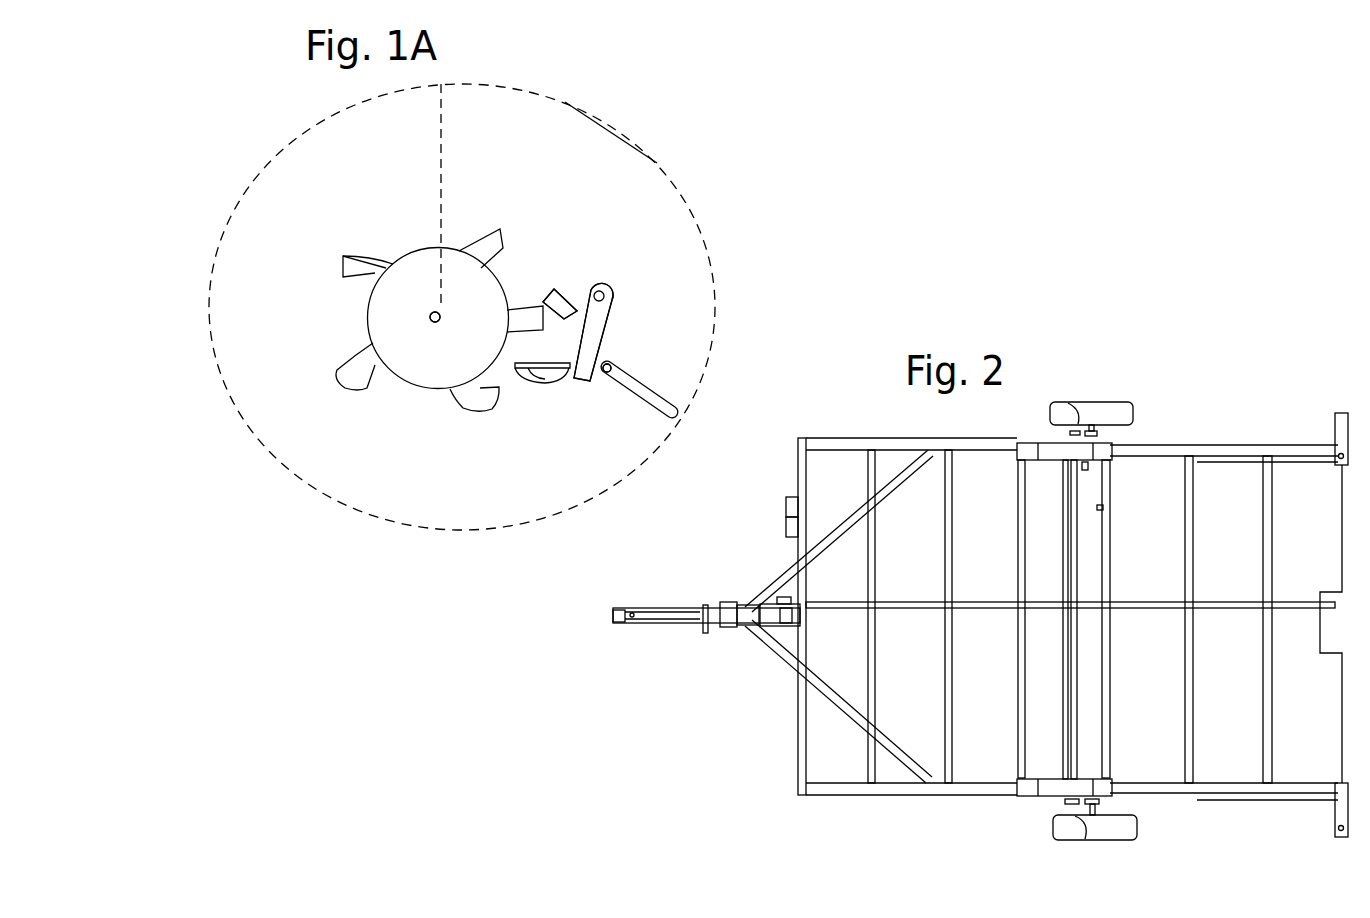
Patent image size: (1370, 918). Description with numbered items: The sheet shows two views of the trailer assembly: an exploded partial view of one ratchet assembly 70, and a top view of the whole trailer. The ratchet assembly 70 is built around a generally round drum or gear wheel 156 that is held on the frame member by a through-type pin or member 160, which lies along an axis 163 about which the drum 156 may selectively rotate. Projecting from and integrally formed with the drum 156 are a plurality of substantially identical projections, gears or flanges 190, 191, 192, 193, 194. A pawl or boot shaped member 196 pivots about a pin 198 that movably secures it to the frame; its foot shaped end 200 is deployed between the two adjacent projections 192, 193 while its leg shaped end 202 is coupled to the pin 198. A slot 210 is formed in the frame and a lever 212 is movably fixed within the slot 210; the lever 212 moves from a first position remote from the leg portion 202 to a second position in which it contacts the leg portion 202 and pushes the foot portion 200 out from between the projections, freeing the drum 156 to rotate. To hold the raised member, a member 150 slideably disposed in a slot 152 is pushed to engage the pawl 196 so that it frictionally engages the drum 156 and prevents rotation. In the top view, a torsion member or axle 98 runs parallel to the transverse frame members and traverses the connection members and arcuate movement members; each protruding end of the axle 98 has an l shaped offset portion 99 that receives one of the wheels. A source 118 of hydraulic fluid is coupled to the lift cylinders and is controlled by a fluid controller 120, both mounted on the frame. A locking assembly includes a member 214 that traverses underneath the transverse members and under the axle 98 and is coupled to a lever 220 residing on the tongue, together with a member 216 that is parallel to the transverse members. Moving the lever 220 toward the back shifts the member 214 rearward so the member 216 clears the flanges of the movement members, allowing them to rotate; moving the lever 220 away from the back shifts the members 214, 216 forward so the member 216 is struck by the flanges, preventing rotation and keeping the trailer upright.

In FIG. 1A, the ratchet assembly 70 is at (690, 172).
In FIG. 1A, the drum or gear wheel 156 is at (492, 304).
In FIG. 1A, the pin or member 160 is at (431, 312).
In FIG. 1A, the axis 163 is at (432, 322).
In FIG. 1A, the projection 190 is at (352, 262).
In FIG. 1A, the projection 191 is at (360, 382).
In FIG. 1A, the projection 192 is at (470, 398).
In FIG. 1A, the projection 193 is at (520, 328).
In FIG. 1A, the projection 194 is at (485, 236).
In FIG. 1A, the pawl or boot shaped member 196 is at (598, 335).
In FIG. 1A, the pin 198 is at (602, 291).
In FIG. 1A, the foot shaped end 200 is at (545, 382).
In FIG. 1A, the leg shaped end 202 is at (610, 300).
In FIG. 1A, the slot 210 is at (561, 284).
In FIG. 1A, the lever 212 is at (562, 300).
In FIG. 1A, the slot 152 is at (668, 413).
In FIG. 1A, the member 150 is at (607, 372).
In FIG. 2, the torsion member or axle 98 is at (1062, 548).
In FIG. 2, the l shaped offset portion 99 is at (1075, 404).
In FIG. 2, the source of hydraulic fluid 118 is at (786, 530).
In FIG. 2, the fluid controller 120 is at (786, 497).
In FIG. 2, the member 214 is at (987, 601).
In FIG. 2, the member 216 is at (1112, 566).
In FIG. 2, the lever 220 is at (790, 603).